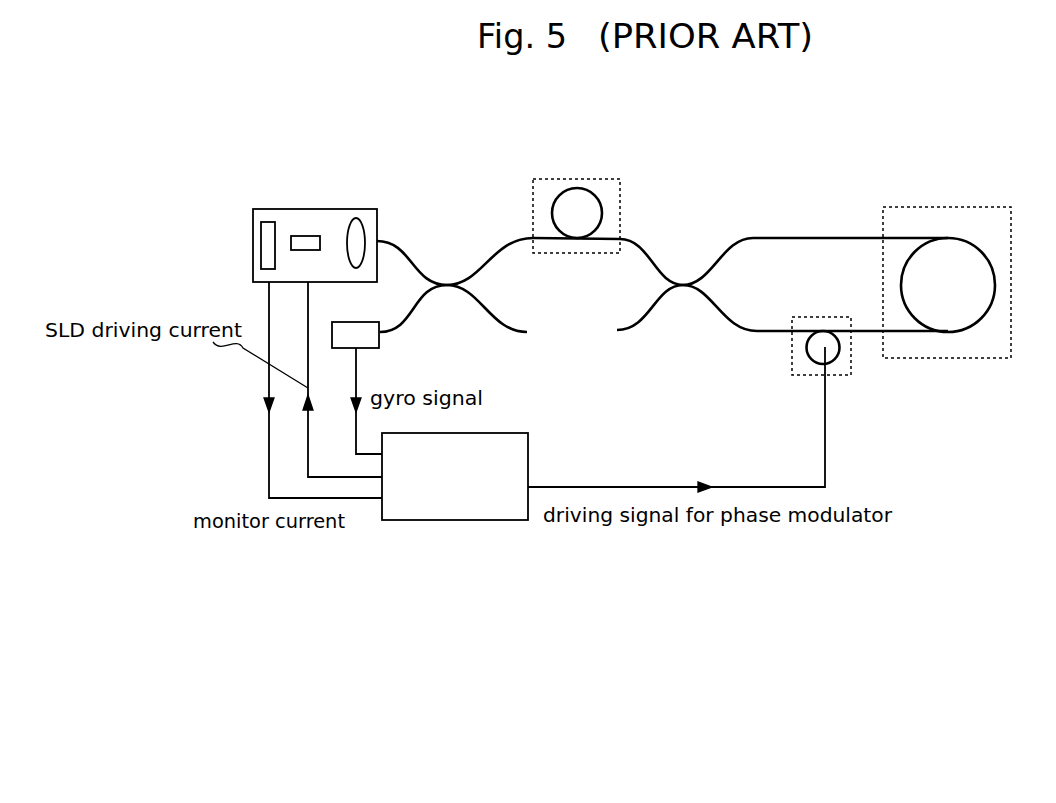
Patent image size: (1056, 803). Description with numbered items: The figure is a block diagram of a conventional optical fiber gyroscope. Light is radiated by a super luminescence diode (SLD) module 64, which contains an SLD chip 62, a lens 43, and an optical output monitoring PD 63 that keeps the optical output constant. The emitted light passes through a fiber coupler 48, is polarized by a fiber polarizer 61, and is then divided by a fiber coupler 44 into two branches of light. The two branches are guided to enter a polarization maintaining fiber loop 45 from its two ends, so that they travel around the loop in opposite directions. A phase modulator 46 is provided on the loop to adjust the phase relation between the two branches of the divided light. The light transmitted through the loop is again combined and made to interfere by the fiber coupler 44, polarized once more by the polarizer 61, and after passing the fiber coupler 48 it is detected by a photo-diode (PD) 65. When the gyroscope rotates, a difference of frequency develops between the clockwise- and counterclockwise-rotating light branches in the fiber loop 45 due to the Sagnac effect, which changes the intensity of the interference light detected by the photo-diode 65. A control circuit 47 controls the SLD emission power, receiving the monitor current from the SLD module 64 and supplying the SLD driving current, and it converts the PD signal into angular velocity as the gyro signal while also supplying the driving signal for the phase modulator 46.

The lens 43 is at (378, 243).
The fiber coupler 44 is at (672, 277).
The polarization maintaining fiber loop 45 is at (947, 218).
The phase modulator 46 is at (840, 363).
The control circuit 47 is at (522, 447).
The fiber coupler 48 is at (433, 280).
The fiber polarizer 61 is at (602, 185).
The SLD chip 62 is at (306, 235).
The optical output monitoring PD 63 is at (268, 221).
The SLD module 64 is at (362, 236).
The photo-diode 65 is at (380, 347).